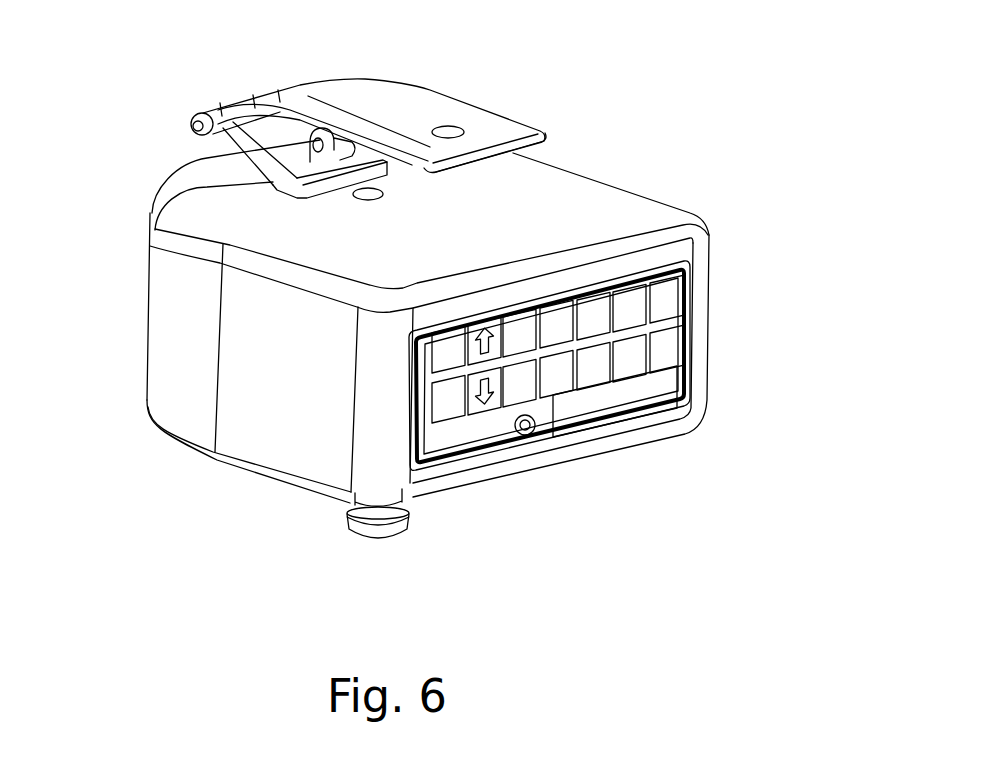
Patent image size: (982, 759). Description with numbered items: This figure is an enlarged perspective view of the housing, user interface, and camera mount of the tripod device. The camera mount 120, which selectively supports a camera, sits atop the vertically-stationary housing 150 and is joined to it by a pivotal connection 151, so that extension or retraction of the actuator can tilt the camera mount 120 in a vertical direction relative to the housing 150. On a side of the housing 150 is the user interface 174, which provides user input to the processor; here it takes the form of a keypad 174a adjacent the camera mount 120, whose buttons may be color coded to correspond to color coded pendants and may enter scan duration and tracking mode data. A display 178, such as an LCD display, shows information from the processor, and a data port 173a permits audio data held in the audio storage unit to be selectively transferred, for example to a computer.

The camera mount 120 is at (459, 96).
The housing 150 is at (134, 309).
The pivotal connection 151 is at (183, 130).
The data port 173a is at (530, 435).
The user interface 174 is at (722, 303).
The keypad 174a is at (680, 368).
The display 178 is at (665, 398).